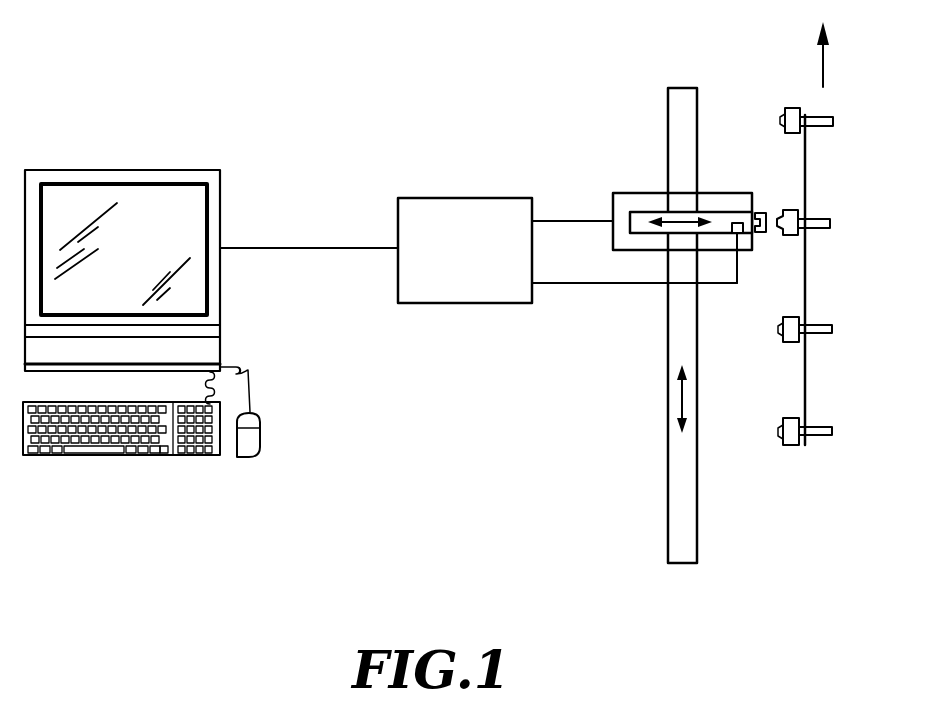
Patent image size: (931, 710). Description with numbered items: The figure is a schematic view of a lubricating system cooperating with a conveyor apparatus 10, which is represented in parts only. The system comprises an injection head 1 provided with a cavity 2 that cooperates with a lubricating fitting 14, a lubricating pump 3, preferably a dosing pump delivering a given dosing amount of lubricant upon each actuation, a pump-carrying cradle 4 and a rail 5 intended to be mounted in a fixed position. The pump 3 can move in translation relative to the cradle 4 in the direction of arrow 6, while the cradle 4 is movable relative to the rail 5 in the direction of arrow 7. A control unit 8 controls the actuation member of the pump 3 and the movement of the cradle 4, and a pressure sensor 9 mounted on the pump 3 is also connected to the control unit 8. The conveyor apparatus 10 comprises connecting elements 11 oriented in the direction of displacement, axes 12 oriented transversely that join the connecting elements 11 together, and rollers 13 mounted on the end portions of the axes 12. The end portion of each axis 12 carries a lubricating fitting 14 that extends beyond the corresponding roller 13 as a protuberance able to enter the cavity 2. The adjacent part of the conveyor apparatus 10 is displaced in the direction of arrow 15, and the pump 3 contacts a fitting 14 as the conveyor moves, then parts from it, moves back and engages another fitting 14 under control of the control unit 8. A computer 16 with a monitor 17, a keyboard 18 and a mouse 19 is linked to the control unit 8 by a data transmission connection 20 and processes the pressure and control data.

The injection head 1 is at (760, 218).
The cavity 2 is at (772, 218).
The lubricating pump 3 is at (645, 212).
The pump-carrying cradle 4 is at (620, 208).
The rail 5 is at (686, 98).
The arrow 6 is at (682, 220).
The arrow 7 is at (680, 398).
The control unit 8 is at (462, 254).
The pressure sensor 9 is at (736, 225).
The conveyor apparatus 10 is at (820, 450).
The connecting elements 11 is at (808, 196).
The axes 12 is at (822, 127).
The rollers 13 is at (786, 112).
The lubricating fitting 14 is at (785, 120).
The arrow 15 is at (827, 70).
The computer 16 is at (192, 166).
The monitor 17 is at (125, 205).
The keyboard 18 is at (101, 456).
The mouse 19 is at (248, 458).
The data transmission connection 20 is at (303, 247).